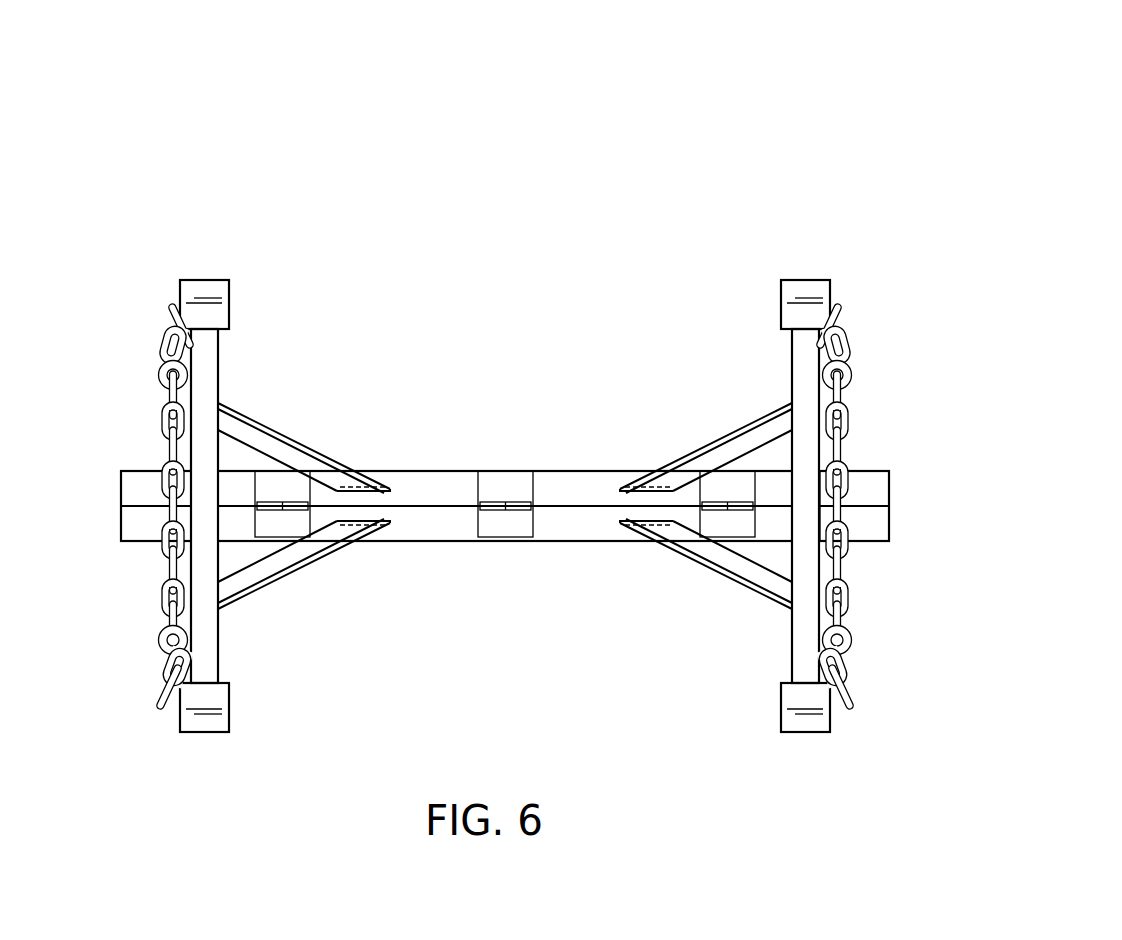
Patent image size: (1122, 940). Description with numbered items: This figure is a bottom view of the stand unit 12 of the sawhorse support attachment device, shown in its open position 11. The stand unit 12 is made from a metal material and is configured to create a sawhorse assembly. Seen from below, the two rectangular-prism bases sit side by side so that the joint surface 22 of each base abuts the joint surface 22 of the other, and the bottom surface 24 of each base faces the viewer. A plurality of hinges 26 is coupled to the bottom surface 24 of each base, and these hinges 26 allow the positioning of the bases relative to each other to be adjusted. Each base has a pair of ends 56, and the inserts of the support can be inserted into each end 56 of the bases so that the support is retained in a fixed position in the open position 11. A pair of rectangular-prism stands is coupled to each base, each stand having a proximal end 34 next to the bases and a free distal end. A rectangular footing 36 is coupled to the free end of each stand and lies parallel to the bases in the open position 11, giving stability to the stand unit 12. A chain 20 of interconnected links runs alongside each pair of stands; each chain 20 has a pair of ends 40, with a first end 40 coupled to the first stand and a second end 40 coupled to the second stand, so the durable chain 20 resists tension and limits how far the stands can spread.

The open position 11 is at (738, 222).
The stand unit 12 is at (808, 120).
The chain 20 is at (178, 577).
The joint surface 22 is at (572, 510).
The bottom surface 24 is at (438, 475).
The hinge 26 is at (280, 490).
The proximal end 34 is at (355, 487).
The footing 36 is at (214, 299).
The ends of chain 40 is at (160, 316).
The end of base 56 is at (121, 488).